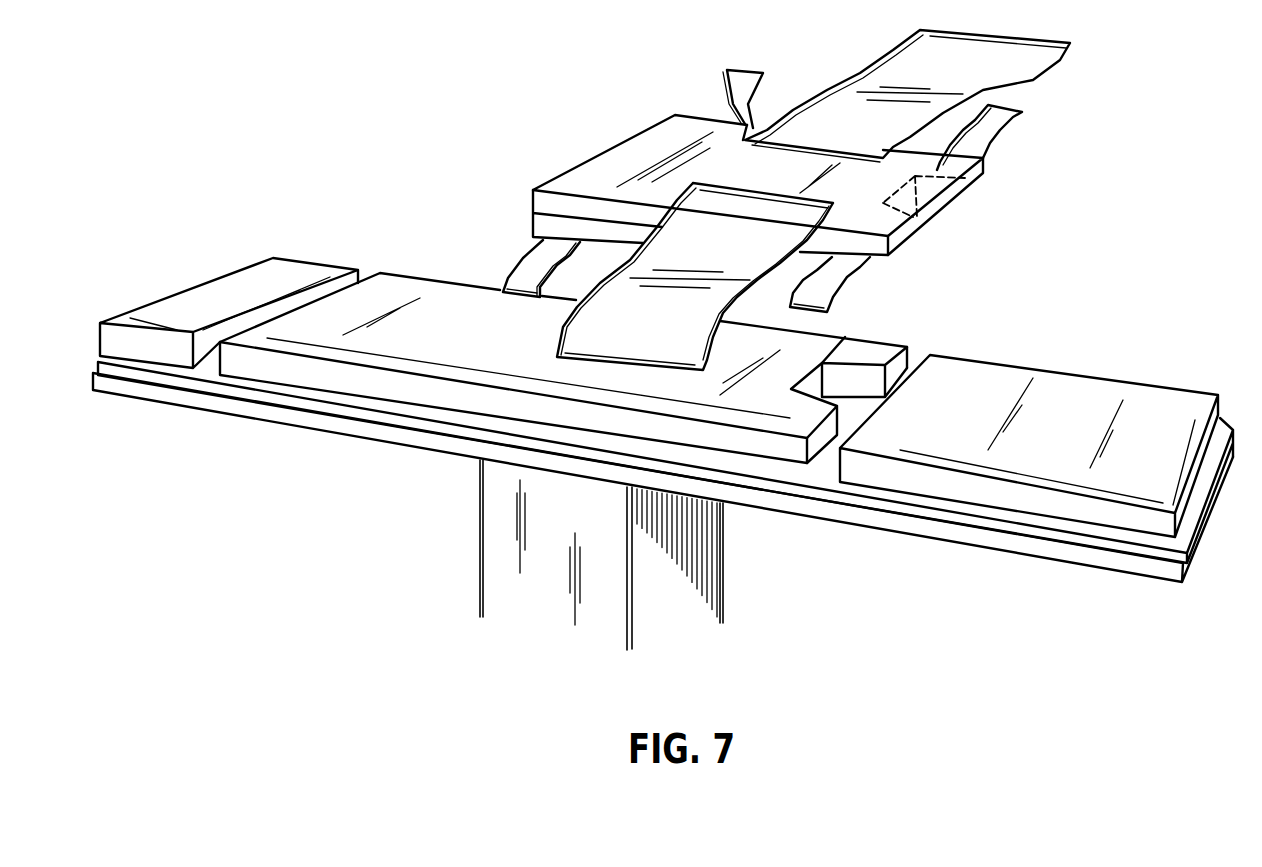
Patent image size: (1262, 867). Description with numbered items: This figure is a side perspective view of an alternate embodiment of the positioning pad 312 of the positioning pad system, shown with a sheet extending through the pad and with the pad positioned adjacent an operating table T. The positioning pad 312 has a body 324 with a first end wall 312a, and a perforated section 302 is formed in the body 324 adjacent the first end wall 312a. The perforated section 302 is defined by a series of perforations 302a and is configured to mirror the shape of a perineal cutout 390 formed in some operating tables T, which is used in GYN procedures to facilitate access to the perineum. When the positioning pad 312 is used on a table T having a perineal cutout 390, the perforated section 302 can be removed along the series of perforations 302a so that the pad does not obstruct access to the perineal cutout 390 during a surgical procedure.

The perforated section 302 is at (923, 198).
The perforations 302a is at (995, 140).
The positioning pad 312 is at (589, 150).
The first end wall 312a is at (980, 178).
The body 324 is at (647, 130).
The perineal cutout 390 is at (850, 385).
The operating table T is at (398, 266).